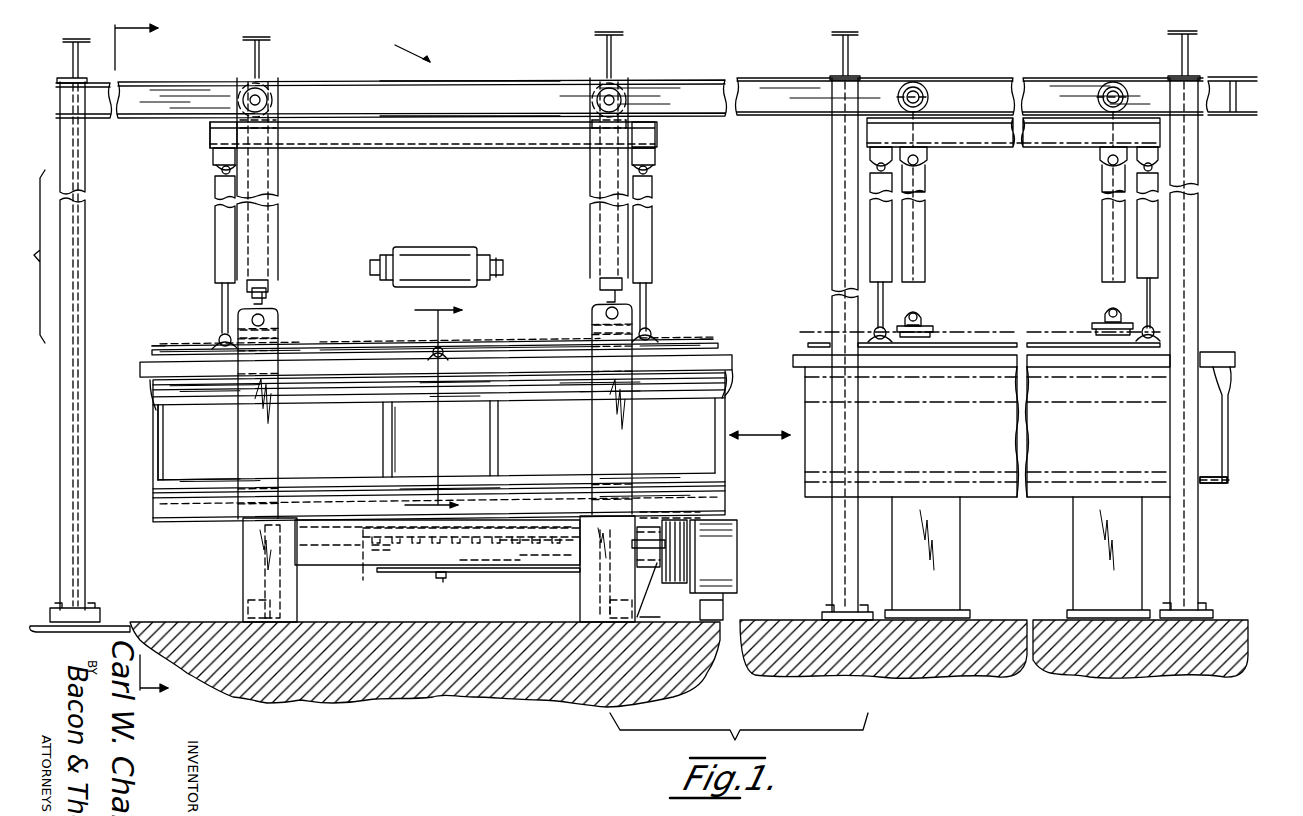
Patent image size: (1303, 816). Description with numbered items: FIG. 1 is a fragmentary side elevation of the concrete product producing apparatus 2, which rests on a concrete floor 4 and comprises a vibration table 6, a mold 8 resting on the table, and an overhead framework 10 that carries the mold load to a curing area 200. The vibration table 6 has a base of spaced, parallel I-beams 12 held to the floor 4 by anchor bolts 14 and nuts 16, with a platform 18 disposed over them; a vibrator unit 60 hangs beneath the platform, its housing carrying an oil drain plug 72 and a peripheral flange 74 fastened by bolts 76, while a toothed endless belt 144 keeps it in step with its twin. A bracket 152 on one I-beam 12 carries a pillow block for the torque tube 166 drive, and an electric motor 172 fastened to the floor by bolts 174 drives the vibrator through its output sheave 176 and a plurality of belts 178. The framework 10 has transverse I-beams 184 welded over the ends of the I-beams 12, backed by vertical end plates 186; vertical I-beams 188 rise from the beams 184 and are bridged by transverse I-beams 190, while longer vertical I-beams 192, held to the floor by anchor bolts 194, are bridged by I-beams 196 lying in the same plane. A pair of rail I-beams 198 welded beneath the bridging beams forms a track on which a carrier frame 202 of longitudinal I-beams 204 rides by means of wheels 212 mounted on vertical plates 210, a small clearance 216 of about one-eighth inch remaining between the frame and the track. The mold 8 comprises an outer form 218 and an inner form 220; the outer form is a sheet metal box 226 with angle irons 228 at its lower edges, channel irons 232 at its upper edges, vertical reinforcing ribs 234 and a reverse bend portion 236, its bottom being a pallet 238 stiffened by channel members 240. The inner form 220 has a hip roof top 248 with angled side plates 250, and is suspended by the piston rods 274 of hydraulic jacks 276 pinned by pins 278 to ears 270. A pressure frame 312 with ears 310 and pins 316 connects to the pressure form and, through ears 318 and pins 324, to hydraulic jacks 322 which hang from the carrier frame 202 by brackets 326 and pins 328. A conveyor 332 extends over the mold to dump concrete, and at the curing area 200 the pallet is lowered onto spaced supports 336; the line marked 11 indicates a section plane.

The concrete product producing apparatus 2 is at (272, 366).
The concrete floor 4 is at (410, 622).
The vibration table 6 is at (350, 575).
The mold 8 is at (680, 340).
The framework 10 is at (666, 128).
The section line 11- 11 is at (422, 407).
The I-beams 12 is at (263, 590).
The anchor bolts 14 is at (278, 690).
The nuts 16 is at (248, 606).
The platform 18 is at (565, 530).
The vibrator unit 60 is at (470, 578).
The oil drain plug 72 is at (441, 580).
The peripheral flange 74 is at (471, 541).
The bolts 76 is at (395, 547).
The toothed flexible endless belt 144 is at (360, 560).
The bracket 152 is at (640, 520).
The torque tube 166 is at (515, 562).
The electric motor 172 is at (735, 540).
The bolts 174 is at (725, 580).
The sheave 176 is at (688, 580).
The flexible endless belts 178 is at (687, 548).
The transverse I-beams 184 is at (555, 560).
The vertical end plates 186 is at (245, 548).
The vertical I-beams 188 is at (280, 435).
The transverse I-beams 190 is at (262, 52).
The vertical I-beams 192 is at (82, 310).
The anchor bolts 194 is at (96, 606).
The I-beams 196 is at (80, 55).
The rail I-beams 198 is at (110, 104).
The curing area 200 is at (1045, 320).
The carrier frame 202 is at (485, 153).
The longitudinally extending I-beams 204 is at (342, 148).
The vertically projecting plates 210 is at (278, 120).
The wheel 212 is at (278, 80).
The clearance 216 is at (470, 98).
The outer form 218 is at (728, 385).
The inner form 220 is at (713, 348).
The sheet metal box 226 is at (158, 445).
The angle irons 228 is at (195, 478).
The channel irons 232 is at (145, 362).
The reinforcing ribs 234 is at (152, 405).
The reverse bend portion 236 is at (580, 400).
The pallet 238 is at (1227, 483).
The reinforcing channel members 240 is at (160, 512).
The top 248 is at (470, 340).
The angled side plates 250 is at (498, 347).
The ears 270 is at (278, 326).
The piston rod 274 is at (268, 292).
The hydraulic jack 276 is at (274, 226).
The pin 278 is at (268, 316).
The ears 310 is at (438, 378).
The pressure frame 312 is at (690, 346).
The pins 316 is at (436, 345).
The ears 318 is at (215, 342).
The hydraulic jacks 322 is at (214, 220).
The pins 324 is at (220, 312).
The brackets 326 is at (213, 152).
The pins 328 is at (222, 170).
The conveyor 332 is at (432, 247).
The supports 336 is at (955, 526).